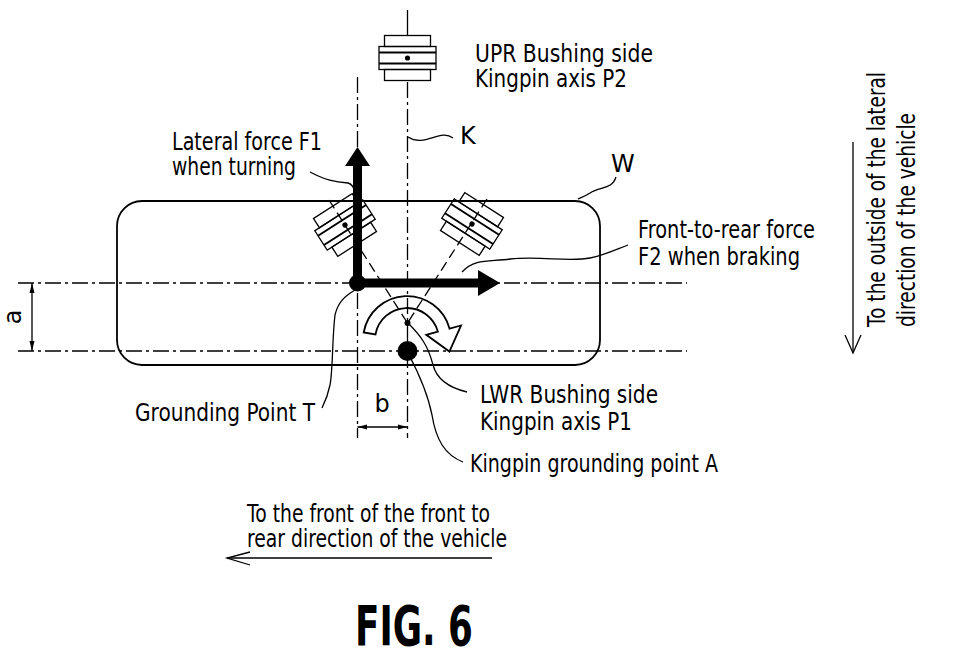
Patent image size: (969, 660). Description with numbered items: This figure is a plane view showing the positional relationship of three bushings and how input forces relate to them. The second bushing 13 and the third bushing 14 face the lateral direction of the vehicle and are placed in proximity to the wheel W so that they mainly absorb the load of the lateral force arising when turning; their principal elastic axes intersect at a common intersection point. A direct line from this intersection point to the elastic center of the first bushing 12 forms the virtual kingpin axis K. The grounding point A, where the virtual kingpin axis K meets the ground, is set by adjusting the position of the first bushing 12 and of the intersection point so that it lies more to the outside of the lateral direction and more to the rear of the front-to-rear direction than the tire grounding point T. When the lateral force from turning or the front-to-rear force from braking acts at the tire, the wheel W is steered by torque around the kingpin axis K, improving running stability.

The first bushing 12 is at (379, 50).
The second bushing 13 is at (315, 237).
The third bushing 14 is at (492, 200).